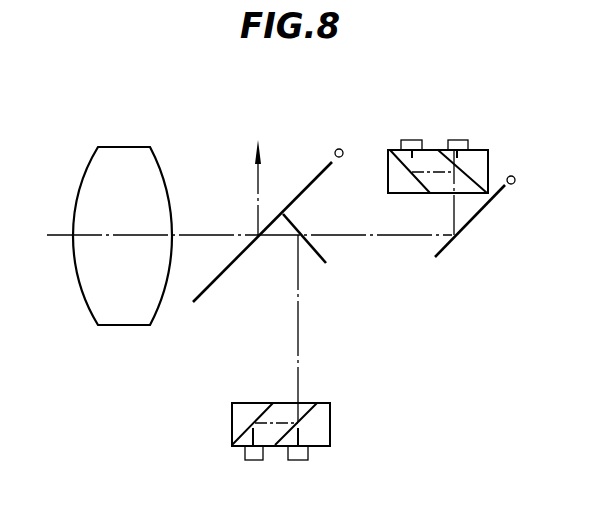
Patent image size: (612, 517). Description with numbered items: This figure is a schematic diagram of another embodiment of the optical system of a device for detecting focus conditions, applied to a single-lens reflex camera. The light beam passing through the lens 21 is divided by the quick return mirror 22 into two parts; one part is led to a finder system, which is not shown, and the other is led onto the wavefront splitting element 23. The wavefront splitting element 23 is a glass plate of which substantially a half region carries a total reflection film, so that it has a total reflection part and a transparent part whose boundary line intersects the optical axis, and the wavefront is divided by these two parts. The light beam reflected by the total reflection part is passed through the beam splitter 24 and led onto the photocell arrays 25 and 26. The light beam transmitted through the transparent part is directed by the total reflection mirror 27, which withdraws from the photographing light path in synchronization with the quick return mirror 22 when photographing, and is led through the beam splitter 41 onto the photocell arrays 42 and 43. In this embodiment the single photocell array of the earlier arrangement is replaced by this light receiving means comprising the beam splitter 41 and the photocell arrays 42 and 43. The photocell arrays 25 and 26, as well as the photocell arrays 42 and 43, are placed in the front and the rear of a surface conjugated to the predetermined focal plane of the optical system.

The lens 21 is at (142, 153).
The quick return mirror 22 is at (322, 167).
The wavefront splitting element 23 is at (317, 258).
The beam splitter 24 is at (330, 422).
The photocell array 25 is at (307, 457).
The photocell array 26 is at (250, 460).
The total reflection mirror 27 is at (503, 188).
The beam splitter 41 is at (488, 163).
The photocell array 42 is at (460, 140).
The photocell array 43 is at (412, 140).